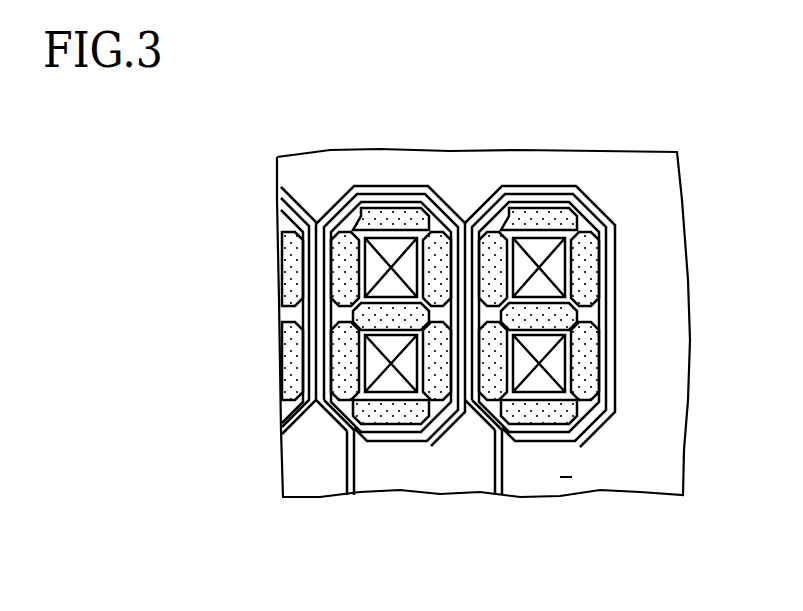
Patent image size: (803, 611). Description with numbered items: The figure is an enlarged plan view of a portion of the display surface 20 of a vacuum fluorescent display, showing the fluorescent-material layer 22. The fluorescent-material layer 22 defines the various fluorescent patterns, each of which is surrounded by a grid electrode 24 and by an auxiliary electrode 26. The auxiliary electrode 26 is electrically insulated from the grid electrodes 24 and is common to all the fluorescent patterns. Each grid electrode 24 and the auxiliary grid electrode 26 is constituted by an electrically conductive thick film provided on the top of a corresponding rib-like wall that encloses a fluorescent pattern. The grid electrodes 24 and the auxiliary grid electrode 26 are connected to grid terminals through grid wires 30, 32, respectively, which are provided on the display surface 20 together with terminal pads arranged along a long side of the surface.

The display surface 20 is at (647, 475).
The fluorescent-material layer 22 is at (396, 212).
The grid electrode 24 is at (341, 224).
The auxiliary electrode 26 is at (516, 186).
The grid wire 30 is at (347, 477).
The grid wire 32 is at (567, 477).